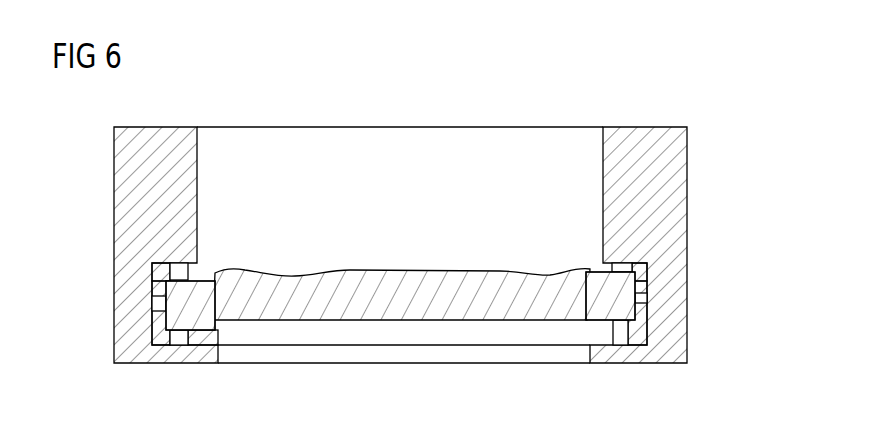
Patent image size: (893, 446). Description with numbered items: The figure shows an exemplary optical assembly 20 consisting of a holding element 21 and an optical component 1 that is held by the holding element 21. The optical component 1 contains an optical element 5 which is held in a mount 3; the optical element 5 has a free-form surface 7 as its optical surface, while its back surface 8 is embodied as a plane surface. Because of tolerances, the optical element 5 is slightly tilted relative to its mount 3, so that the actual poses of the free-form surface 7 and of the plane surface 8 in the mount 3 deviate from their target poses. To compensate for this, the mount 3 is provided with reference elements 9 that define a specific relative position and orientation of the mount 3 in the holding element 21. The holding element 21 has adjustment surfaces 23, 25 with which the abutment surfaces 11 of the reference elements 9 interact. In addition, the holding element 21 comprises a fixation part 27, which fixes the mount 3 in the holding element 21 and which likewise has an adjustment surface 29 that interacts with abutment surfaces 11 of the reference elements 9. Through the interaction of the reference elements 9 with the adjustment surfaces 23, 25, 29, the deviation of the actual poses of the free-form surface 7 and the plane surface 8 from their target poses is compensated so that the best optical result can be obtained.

The optical component 1 is at (360, 173).
The optical assembly 20 is at (627, 105).
The holding element 21 is at (678, 153).
The mount 3 is at (200, 330).
The optical element 5 is at (422, 322).
The free-form surface 7 is at (318, 271).
The back surface 8 is at (471, 322).
The reference elements 9 is at (160, 283).
The abutment surfaces 11 is at (178, 263).
The adjustment surface 23 is at (153, 269).
The adjustment surface 25 is at (152, 340).
The fixation part 27 is at (604, 352).
The adjustment surface 29 is at (152, 346).